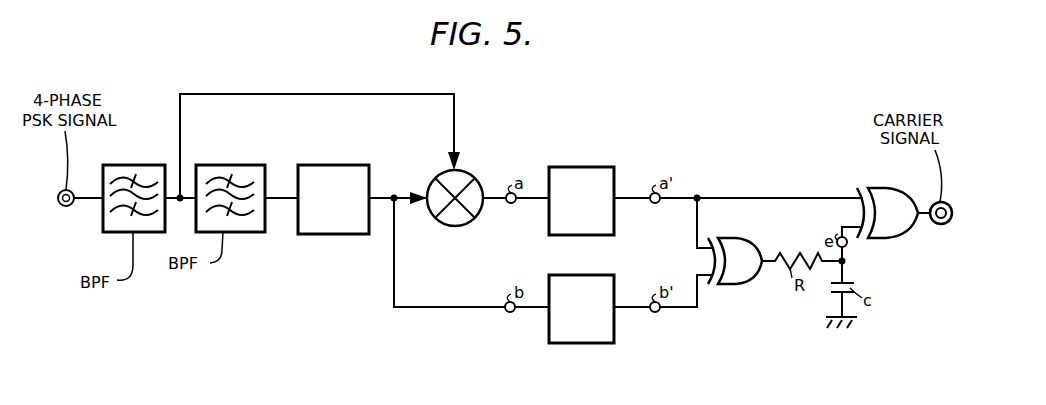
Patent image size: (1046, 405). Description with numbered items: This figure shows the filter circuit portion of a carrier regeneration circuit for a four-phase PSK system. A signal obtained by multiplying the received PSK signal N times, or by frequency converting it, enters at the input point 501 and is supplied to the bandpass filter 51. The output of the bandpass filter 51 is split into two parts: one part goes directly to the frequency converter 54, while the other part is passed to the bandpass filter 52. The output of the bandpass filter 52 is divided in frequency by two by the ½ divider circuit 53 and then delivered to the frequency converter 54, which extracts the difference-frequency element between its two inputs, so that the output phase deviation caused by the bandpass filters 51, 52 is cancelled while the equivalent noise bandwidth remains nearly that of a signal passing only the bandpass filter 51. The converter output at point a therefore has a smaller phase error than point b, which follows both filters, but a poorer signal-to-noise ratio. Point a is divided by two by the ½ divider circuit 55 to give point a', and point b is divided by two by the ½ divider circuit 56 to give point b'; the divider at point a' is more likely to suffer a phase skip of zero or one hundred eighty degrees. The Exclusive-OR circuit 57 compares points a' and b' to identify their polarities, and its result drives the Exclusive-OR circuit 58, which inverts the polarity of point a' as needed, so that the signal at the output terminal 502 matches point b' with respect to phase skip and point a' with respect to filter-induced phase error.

The bandpass filter 51 is at (133, 165).
The bandpass filter 52 is at (235, 165).
The ½ divider circuit 53 is at (337, 165).
The frequency converter 54 is at (470, 178).
The ½ divider circuit 55 is at (589, 167).
The ½ divider circuit 56 is at (568, 345).
The Exclusive-OR circuit 57 is at (755, 273).
The Exclusive-OR circuit 58 is at (895, 198).
The input point 501 is at (66, 206).
The output terminal 502 is at (941, 224).